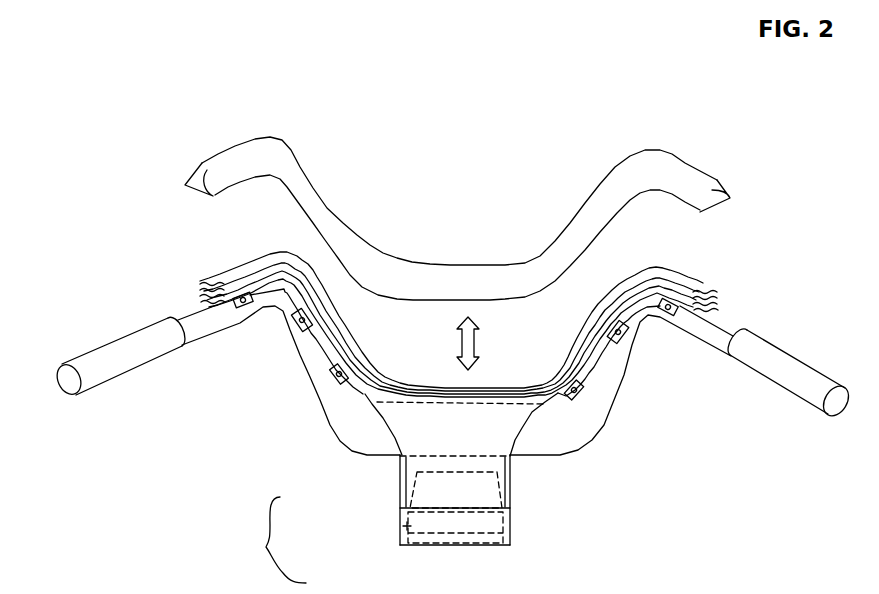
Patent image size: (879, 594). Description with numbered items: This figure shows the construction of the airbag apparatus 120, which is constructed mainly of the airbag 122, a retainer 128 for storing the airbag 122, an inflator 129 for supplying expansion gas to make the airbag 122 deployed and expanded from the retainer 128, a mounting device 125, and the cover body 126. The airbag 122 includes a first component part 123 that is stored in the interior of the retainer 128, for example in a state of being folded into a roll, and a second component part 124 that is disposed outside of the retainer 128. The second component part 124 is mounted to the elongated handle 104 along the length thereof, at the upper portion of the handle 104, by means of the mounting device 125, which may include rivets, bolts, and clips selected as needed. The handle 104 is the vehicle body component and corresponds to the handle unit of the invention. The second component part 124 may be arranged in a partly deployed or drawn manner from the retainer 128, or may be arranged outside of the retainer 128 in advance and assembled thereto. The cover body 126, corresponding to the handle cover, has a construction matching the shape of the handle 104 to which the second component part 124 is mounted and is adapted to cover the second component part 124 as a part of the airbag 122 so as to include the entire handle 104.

The handle 104 is at (188, 314).
The airbag apparatus 120 is at (643, 488).
The airbag 122 is at (264, 540).
The first component part 123 is at (405, 526).
The second component part 124 is at (354, 400).
The mounting device 125 is at (575, 393).
The cover body 126 is at (583, 200).
The retainer 128 is at (522, 539).
The inflator 129 is at (473, 547).